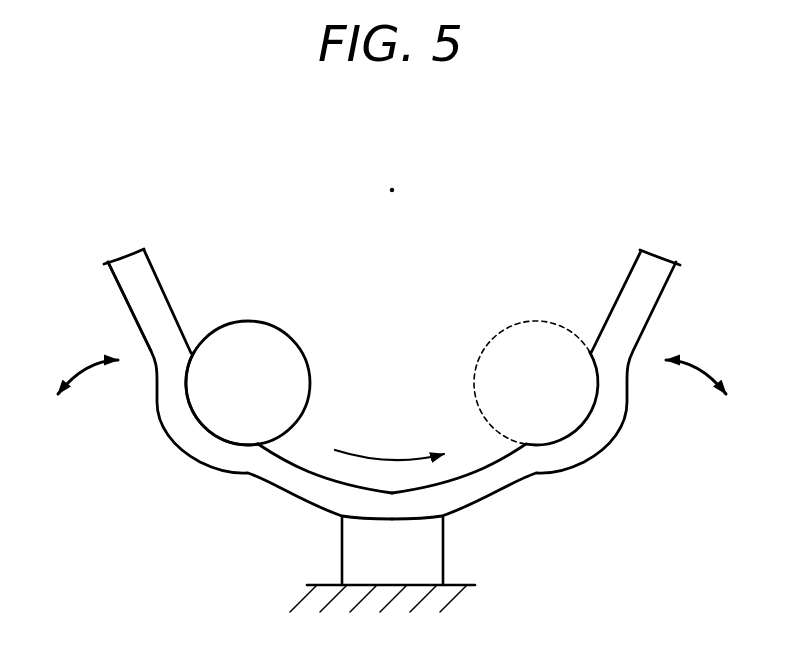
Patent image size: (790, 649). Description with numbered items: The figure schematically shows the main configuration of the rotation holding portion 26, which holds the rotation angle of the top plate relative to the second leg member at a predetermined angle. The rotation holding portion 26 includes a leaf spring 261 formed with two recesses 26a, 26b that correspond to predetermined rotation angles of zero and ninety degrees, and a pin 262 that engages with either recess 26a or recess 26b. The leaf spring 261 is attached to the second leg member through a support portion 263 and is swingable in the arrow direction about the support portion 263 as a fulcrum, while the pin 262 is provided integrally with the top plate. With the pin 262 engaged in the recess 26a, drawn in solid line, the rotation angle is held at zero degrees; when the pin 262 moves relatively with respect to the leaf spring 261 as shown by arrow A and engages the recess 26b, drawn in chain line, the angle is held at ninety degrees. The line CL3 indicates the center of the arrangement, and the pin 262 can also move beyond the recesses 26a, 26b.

The rotation holding portion 26 is at (359, 344).
The leaf spring 261 is at (140, 287).
The pin 262 is at (272, 323).
The recess 26a is at (220, 437).
The recess 26b is at (563, 435).
The support portion 263 is at (341, 547).
The center line CL3 is at (392, 190).
The arrow A is at (389, 448).